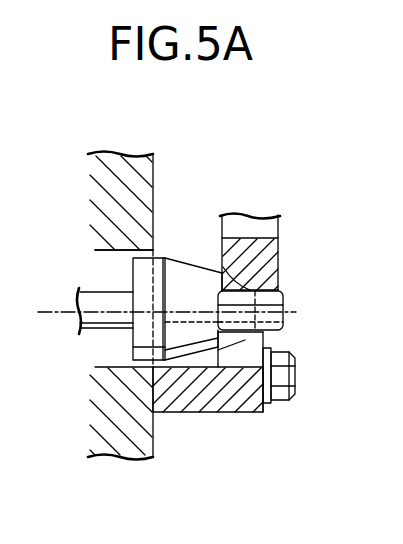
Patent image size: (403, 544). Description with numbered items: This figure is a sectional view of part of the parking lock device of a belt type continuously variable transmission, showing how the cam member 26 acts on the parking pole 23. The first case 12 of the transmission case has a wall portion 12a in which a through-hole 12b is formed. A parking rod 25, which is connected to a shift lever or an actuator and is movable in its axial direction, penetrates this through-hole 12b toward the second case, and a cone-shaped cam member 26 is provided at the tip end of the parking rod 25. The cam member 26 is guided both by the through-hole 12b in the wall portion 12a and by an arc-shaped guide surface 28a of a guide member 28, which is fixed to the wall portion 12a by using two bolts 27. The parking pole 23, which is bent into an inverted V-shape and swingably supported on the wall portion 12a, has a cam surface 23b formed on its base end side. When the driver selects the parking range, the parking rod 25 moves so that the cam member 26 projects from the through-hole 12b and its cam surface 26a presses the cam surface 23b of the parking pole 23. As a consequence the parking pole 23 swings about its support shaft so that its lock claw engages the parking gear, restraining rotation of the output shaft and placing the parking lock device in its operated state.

The first case 12 is at (158, 164).
The wall portion 12a is at (155, 218).
The through-hole 12b is at (110, 252).
The parking rod 25 is at (95, 330).
The cam member 26 is at (187, 256).
The cam surface 26a is at (207, 352).
The parking pole 23 is at (282, 257).
The cam surface 23b is at (285, 298).
The bolts 27 is at (290, 376).
The guide member 28 is at (241, 416).
The guide surface 28a is at (264, 340).